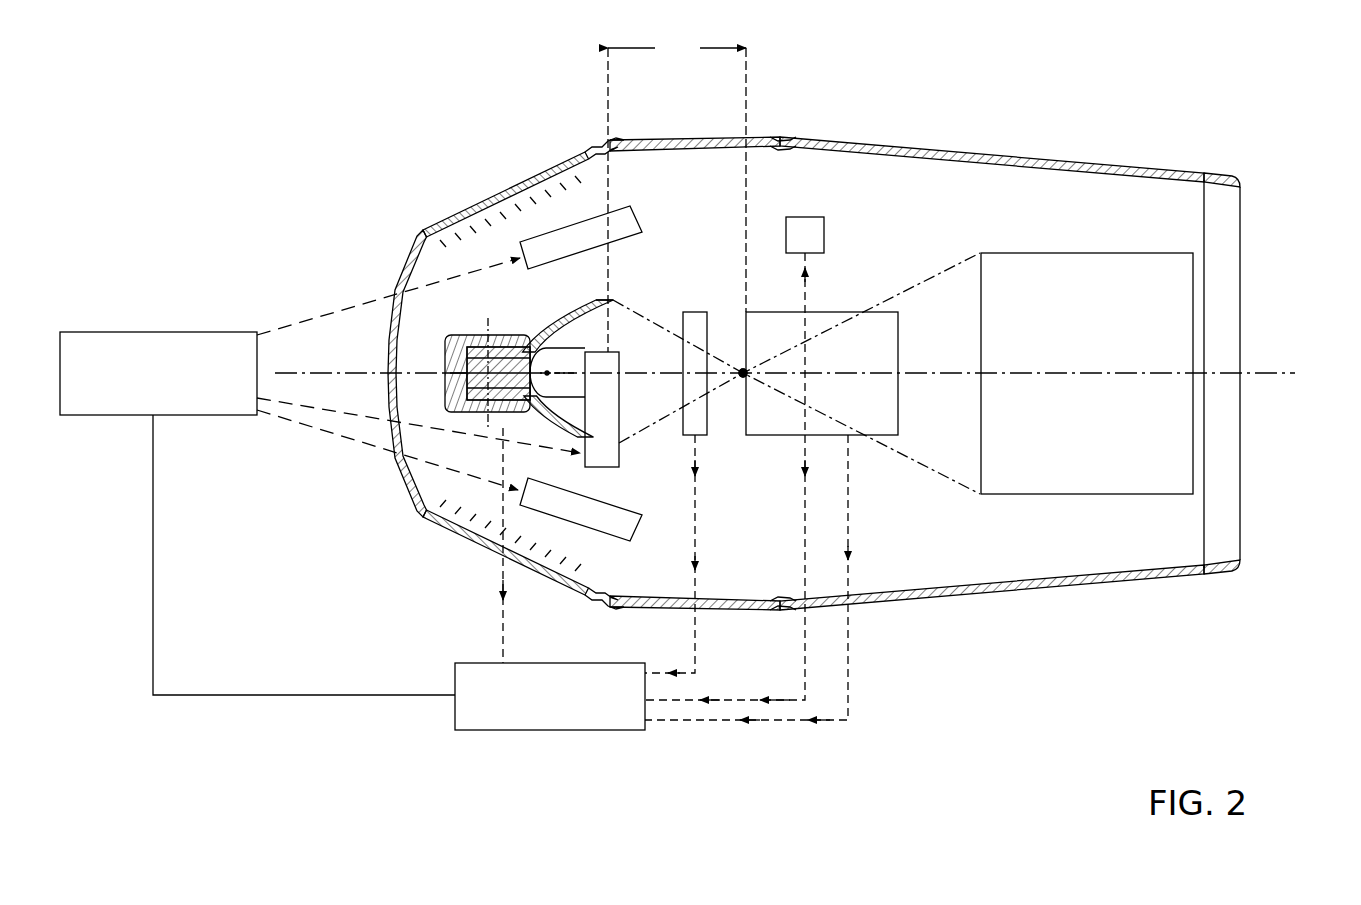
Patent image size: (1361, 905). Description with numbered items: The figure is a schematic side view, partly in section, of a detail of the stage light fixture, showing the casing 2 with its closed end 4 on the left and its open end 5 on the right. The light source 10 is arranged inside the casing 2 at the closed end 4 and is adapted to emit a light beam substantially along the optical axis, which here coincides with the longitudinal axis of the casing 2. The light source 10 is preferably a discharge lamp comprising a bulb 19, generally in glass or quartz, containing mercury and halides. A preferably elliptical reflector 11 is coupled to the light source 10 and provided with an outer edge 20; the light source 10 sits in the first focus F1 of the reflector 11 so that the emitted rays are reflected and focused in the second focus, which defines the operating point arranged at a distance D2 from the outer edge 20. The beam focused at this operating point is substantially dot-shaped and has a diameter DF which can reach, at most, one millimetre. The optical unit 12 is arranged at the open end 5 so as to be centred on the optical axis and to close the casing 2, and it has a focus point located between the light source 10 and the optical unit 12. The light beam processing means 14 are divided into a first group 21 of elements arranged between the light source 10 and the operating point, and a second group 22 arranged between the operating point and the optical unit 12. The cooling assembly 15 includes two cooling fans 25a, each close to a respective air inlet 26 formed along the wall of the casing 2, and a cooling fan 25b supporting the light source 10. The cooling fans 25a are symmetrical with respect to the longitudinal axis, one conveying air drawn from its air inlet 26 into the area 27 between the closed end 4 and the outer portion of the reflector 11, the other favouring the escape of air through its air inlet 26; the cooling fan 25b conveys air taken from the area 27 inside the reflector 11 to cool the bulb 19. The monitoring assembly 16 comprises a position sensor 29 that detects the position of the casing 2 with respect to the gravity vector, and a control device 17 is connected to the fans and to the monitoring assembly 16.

The casing 2 is at (1050, 160).
The closed end 4 is at (814, 346).
The open end 5 is at (1201, 165).
The light source 10 is at (566, 360).
The reflector 11 is at (540, 338).
The optical unit 12 is at (1122, 253).
The light beam processing means 14 is at (802, 350).
The cooling assembly 15 is at (485, 510).
The monitoring assembly 16 is at (608, 745).
The control device 17 is at (96, 416).
The bulb 19 is at (548, 318).
The outer edge 20 is at (612, 300).
The first group of light beam processing elements 21 is at (690, 435).
The second group of light beam processing elements 22 is at (890, 405).
The cooling fans 25a is at (568, 244).
The cooling fan 25b is at (608, 456).
The air inlet 26 is at (522, 172).
The area 27 is at (440, 483).
The position sensor 29 is at (822, 235).
The distance D2 is at (677, 193).
The diameter DF is at (742, 379).
The first focus F1 is at (490, 338).